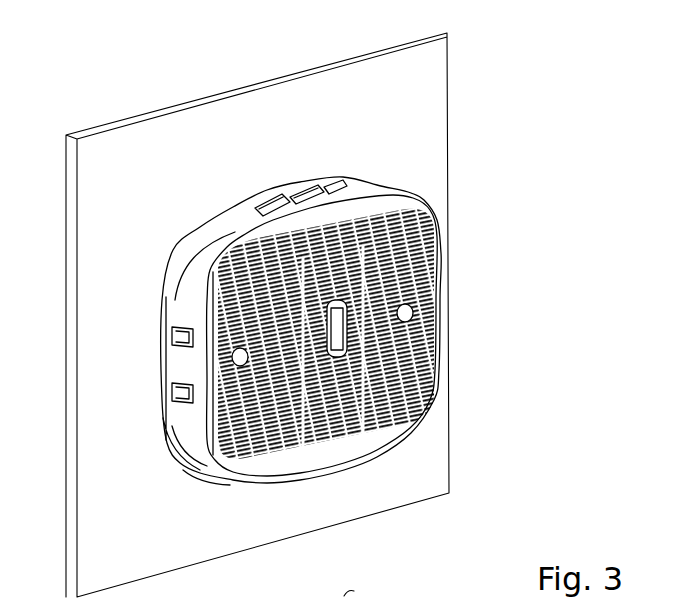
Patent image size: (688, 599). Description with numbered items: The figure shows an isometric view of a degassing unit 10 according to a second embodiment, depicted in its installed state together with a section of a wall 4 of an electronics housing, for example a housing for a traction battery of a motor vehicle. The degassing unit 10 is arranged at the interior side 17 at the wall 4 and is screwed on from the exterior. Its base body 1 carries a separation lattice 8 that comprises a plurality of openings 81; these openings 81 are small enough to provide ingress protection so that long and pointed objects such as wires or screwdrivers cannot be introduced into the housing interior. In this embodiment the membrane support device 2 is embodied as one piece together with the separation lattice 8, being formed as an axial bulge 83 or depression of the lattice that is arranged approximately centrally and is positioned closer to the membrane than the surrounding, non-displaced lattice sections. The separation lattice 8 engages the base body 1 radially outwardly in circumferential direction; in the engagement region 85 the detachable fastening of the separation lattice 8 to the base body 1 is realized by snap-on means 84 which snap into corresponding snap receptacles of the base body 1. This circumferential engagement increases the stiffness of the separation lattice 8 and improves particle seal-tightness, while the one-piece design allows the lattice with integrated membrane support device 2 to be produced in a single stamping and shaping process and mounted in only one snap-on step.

The base body 1 is at (267, 253).
The membrane support device 2 is at (329, 359).
The wall 4 is at (427, 493).
The separation lattice 8 is at (356, 302).
The degassing unit 10 is at (296, 309).
The interior side 17 is at (490, 399).
The openings 81 is at (417, 277).
The axial bulge 83 is at (340, 337).
The snap-on means 84 is at (288, 193).
The engagement region 85 is at (238, 230).